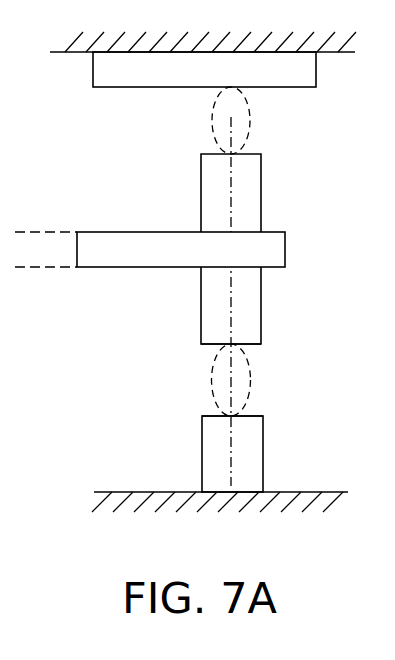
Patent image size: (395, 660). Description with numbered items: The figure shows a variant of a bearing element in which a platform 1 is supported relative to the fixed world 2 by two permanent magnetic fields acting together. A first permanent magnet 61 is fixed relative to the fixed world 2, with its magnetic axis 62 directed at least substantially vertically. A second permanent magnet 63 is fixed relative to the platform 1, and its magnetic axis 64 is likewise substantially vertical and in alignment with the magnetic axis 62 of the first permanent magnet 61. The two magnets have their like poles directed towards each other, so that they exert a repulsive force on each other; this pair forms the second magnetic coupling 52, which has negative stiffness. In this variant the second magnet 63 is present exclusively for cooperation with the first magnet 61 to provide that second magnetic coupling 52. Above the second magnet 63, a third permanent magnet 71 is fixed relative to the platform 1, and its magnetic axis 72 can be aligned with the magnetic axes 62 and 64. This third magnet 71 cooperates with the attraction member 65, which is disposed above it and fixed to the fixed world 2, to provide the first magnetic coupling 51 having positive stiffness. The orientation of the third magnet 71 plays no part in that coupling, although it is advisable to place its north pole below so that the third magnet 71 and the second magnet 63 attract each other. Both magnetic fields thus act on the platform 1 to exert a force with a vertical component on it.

The platform 1 is at (84, 232).
The fixed world 2 is at (66, 53).
The first magnetic coupling 51 is at (250, 115).
The second magnetic coupling 52 is at (252, 384).
The first permanent magnet 61 is at (202, 456).
The magnetic axis of the first permanent magnet 62 is at (231, 404).
The second permanent magnet 63 is at (201, 279).
The magnetic axis of the second permanent magnet 64 is at (231, 347).
The attraction member 65 is at (110, 88).
The third permanent magnet 71 is at (201, 190).
The magnetic axis of the third permanent magnet 72 is at (230, 121).